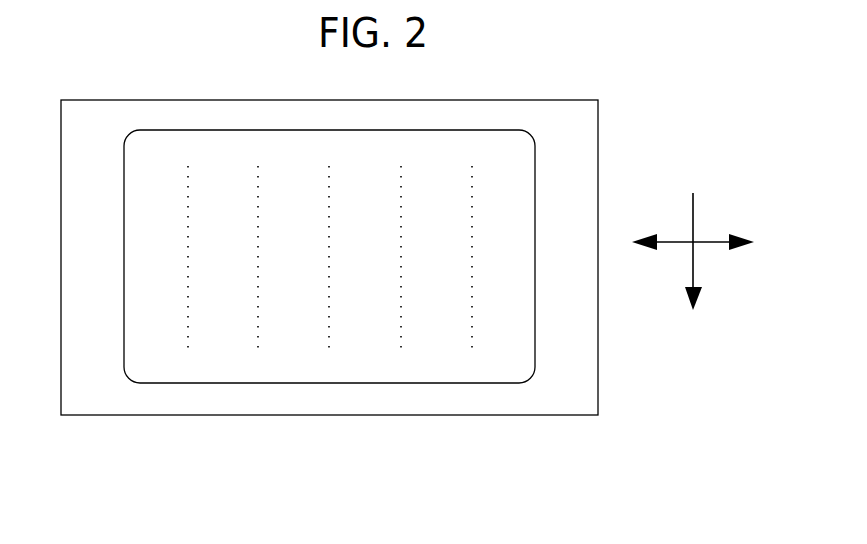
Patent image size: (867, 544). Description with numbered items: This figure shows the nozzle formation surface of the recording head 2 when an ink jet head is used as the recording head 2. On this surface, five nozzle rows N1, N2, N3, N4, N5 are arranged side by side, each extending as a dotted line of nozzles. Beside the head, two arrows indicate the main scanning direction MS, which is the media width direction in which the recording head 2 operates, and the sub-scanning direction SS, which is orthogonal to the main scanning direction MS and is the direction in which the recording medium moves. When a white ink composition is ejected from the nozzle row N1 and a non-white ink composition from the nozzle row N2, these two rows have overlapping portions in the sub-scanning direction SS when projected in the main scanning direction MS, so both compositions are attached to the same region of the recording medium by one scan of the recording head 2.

The recording head 2 is at (598, 128).
The nozzle row N1 is at (188, 352).
The nozzle row N2 is at (258, 352).
The third nozzle row N3 is at (329, 352).
The fourth nozzle row N4 is at (401, 352).
The fifth nozzle row N5 is at (472, 352).
The main scanning direction MS is at (722, 240).
The sub-scanning direction SS is at (693, 262).